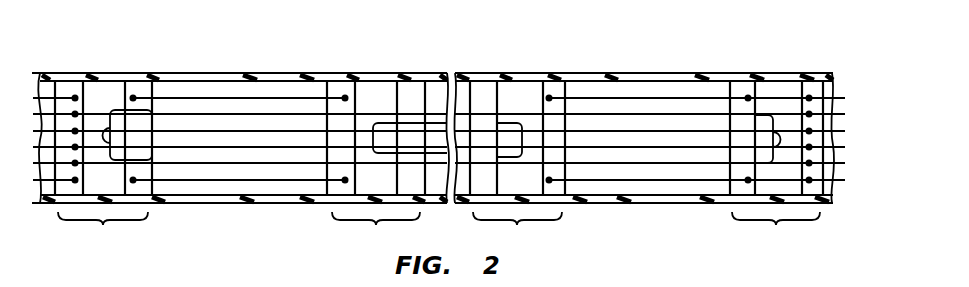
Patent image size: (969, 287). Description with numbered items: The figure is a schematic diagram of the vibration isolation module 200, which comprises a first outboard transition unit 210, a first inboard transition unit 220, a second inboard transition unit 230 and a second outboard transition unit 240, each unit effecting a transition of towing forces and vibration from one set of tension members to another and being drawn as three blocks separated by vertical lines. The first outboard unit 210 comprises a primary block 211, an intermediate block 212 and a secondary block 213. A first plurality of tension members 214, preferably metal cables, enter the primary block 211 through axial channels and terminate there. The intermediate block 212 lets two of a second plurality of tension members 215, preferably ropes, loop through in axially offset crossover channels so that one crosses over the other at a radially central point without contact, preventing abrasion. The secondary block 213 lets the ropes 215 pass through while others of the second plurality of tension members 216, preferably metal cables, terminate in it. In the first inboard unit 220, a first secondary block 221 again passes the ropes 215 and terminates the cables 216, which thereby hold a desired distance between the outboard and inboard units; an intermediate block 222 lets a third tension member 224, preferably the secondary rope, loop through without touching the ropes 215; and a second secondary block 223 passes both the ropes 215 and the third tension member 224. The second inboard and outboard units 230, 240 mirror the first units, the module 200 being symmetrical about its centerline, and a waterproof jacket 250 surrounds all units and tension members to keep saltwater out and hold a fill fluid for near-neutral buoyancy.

The vibration isolation module 200 is at (245, 57).
The first outboard transition unit 210 is at (102, 137).
The primary block 211 is at (68, 87).
The intermediate block 212 is at (107, 88).
The secondary block 213 is at (142, 88).
The first plurality of tension members 214 is at (33, 97).
The ones of the second plurality of tension members 215 is at (263, 110).
The others of the second plurality of tension members 216 is at (307, 97).
The first inboard transition unit 220 is at (389, 141).
The first secondary block 221 is at (338, 92).
The intermediate block 222 is at (380, 93).
The second secondary block 223 is at (408, 95).
The third tension member 224 is at (513, 120).
The second inboard transition unit 230 is at (517, 141).
The second outboard transition unit 240 is at (776, 166).
The waterproof jacket 250 is at (630, 73).